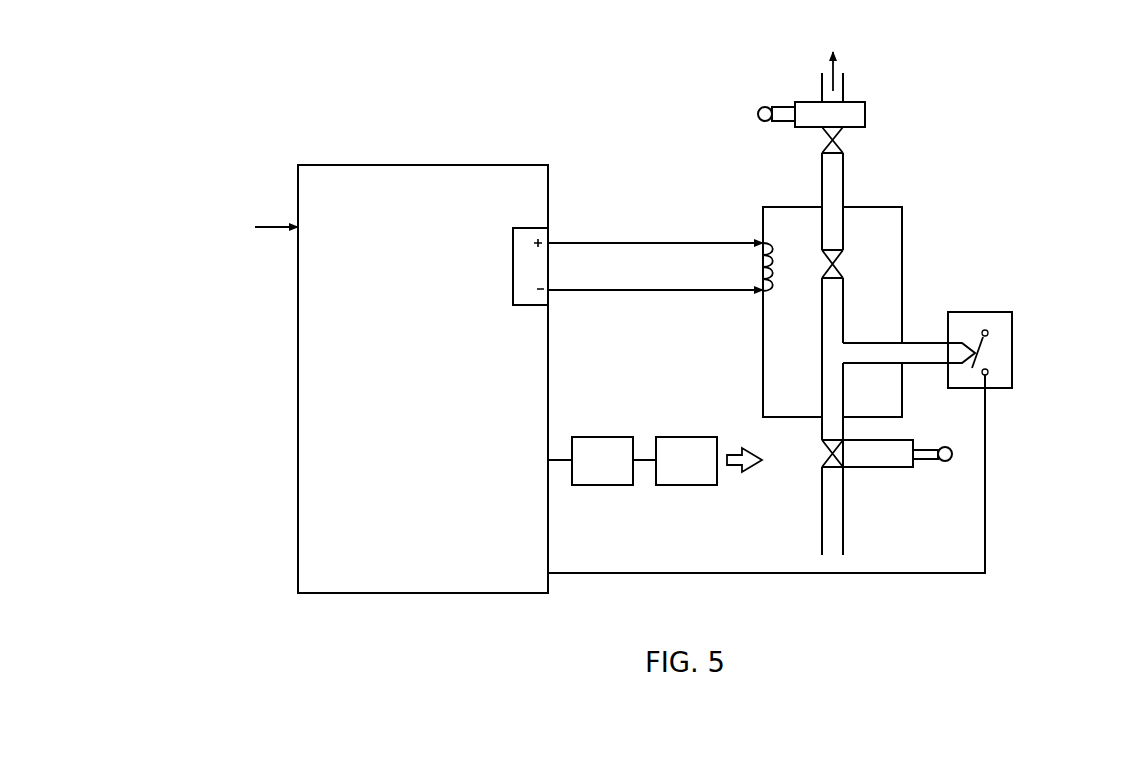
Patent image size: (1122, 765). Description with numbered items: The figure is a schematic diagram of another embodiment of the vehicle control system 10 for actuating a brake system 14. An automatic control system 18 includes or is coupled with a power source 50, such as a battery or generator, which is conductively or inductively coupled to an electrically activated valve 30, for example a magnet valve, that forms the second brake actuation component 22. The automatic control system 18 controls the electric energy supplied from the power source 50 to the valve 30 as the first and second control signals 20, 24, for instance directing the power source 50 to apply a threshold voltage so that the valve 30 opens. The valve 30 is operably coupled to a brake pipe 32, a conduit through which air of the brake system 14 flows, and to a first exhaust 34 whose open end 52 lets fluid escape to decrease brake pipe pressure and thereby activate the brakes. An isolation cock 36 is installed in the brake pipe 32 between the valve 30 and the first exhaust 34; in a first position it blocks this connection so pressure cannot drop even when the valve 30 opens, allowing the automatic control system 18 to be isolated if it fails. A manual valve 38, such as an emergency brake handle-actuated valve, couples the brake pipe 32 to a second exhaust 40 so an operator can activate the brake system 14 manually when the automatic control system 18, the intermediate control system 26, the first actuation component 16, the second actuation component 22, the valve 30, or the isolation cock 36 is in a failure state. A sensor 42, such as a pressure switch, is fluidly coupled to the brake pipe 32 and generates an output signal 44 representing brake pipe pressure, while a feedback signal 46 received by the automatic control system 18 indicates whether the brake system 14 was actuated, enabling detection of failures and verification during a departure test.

The vehicle control system 10 is at (1036, 110).
The brake system 14 is at (820, 429).
The first actuation component 16 is at (686, 437).
The automatic control system 18 is at (298, 391).
The first control signal 20 is at (558, 465).
The second brake actuation component 22 is at (763, 320).
The second control signal 24 is at (652, 243).
The intermediate control system 26 is at (600, 437).
The electrically activated valve 30 is at (795, 397).
The brake pipe 32 is at (835, 329).
The first exhaust 34 is at (845, 90).
The isolation cock 36 is at (862, 116).
The manual valve 38 is at (878, 459).
The second exhaust 40 is at (828, 510).
The sensor 42 is at (1012, 350).
The output signal 44 is at (985, 487).
The feedback signal 46 is at (262, 222).
The power source 50 is at (525, 307).
The open end 52 is at (835, 63).